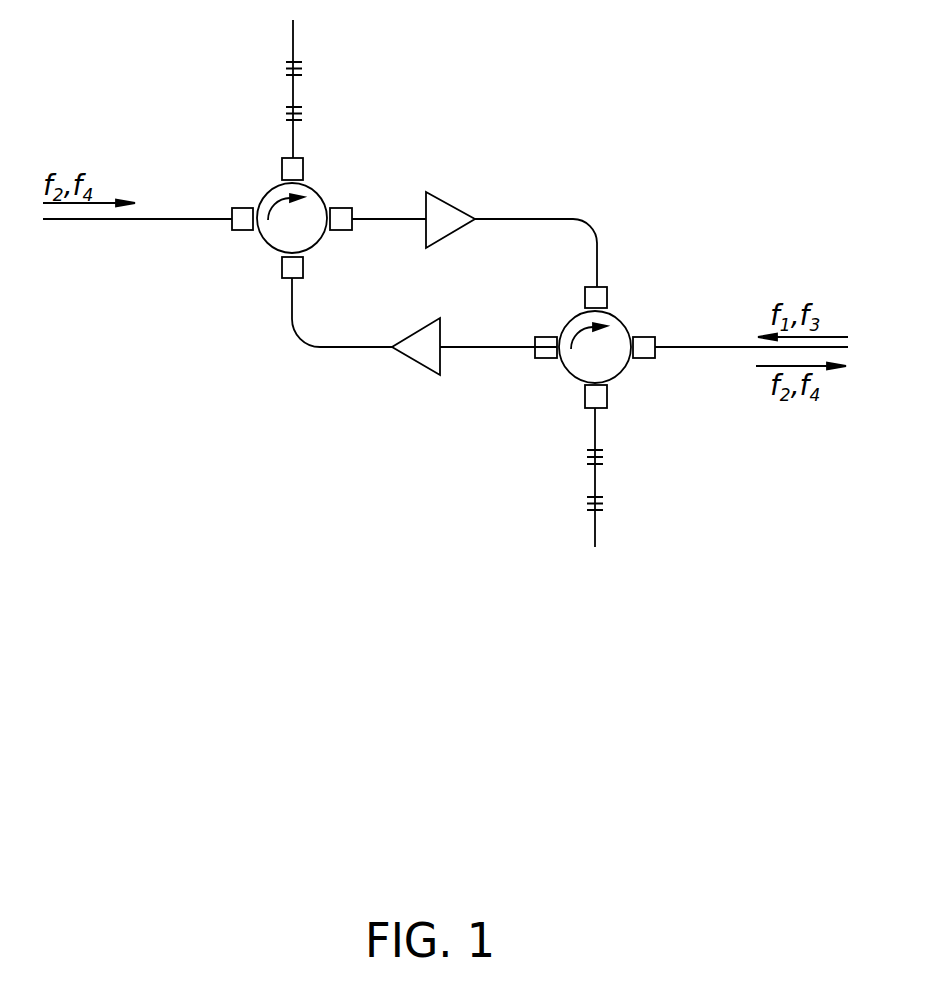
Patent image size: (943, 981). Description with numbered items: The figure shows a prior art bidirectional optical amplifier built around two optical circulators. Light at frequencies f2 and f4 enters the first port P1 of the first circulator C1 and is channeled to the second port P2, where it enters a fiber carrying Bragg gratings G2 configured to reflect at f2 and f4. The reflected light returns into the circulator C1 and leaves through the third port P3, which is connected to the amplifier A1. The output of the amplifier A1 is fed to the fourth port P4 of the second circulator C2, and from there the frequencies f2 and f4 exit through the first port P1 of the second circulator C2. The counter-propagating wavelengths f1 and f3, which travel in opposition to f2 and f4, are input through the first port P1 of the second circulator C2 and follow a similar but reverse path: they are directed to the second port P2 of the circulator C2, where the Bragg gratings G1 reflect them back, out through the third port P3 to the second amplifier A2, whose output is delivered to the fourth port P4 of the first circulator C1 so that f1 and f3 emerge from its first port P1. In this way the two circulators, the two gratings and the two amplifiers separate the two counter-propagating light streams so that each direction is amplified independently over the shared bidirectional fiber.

The first circulator C1 is at (263, 245).
The second circulator C2 is at (567, 373).
The amplifier A1 is at (455, 205).
The amplifier A2 is at (413, 358).
The Bragg gratings G1 is at (565, 477).
The Bragg gratings G2 is at (267, 85).
The first port P1 is at (442, 270).
The second port P2 is at (459, 278).
The third port P3 is at (443, 270).
The fourth port P4 is at (459, 282).
The frequency f1 is at (610, 454).
The frequency f2 is at (309, 107).
The frequency f3 is at (610, 500).
The frequency f4 is at (309, 64).